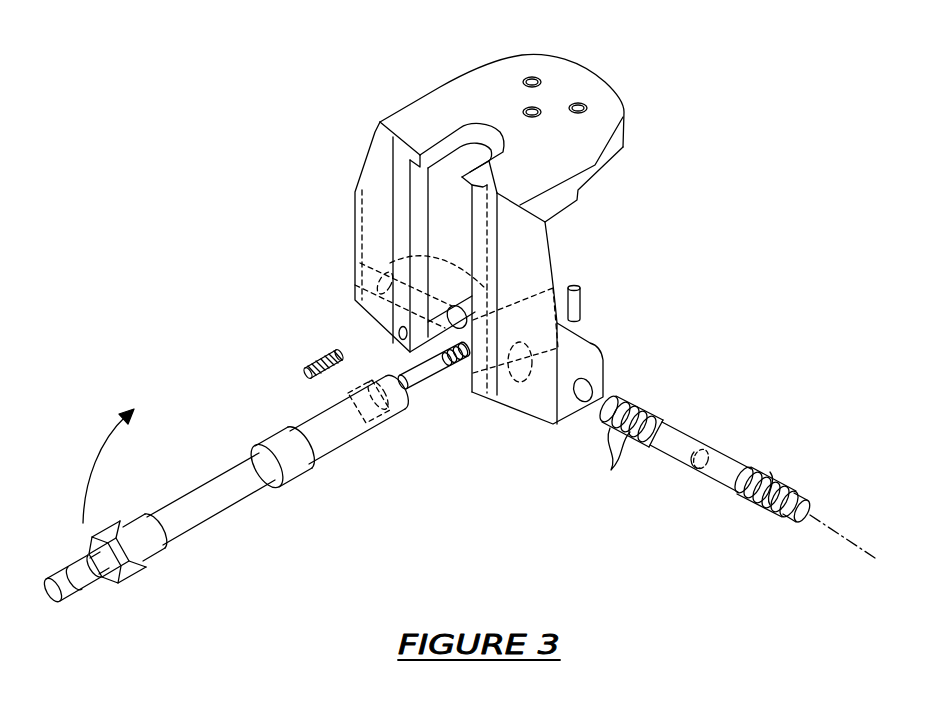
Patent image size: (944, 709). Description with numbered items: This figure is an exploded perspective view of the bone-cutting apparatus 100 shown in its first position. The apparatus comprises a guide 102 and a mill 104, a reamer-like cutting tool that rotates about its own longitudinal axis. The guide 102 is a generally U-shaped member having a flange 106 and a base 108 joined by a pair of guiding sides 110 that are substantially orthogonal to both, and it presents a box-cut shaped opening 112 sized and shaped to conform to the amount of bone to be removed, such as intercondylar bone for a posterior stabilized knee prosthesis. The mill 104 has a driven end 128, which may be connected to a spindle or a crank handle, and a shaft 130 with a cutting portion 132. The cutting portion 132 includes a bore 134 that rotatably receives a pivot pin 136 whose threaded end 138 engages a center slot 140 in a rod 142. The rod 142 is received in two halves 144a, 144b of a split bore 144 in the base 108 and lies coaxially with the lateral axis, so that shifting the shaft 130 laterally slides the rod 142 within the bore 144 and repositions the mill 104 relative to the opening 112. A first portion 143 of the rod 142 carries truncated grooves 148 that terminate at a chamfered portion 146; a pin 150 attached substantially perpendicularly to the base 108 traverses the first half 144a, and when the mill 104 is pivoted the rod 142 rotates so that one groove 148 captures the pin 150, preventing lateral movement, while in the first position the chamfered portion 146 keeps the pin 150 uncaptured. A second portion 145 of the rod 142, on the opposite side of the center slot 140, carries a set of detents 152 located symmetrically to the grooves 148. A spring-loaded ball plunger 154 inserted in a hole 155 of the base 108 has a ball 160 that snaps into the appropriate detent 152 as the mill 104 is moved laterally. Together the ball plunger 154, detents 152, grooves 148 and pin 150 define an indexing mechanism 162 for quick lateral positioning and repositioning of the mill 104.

The bone-cutting apparatus 100 is at (255, 190).
The guide 102 is at (406, 86).
The mill 104 is at (210, 548).
The flange 106 is at (550, 88).
The base 108 is at (562, 402).
The guiding sides 110 is at (373, 221).
The box-cut opening 112 is at (436, 187).
The driven end 128 is at (75, 603).
The shaft 130 is at (222, 482).
The cutting portion 132 is at (303, 450).
The bore 134 is at (385, 422).
The pivot pin 136 is at (420, 385).
The threaded end 138 is at (452, 372).
The center slot 140 is at (710, 445).
The rod 142 is at (660, 505).
The first portion 143 is at (752, 507).
The split bore 144 is at (452, 262).
The first half of the split bore 144a is at (525, 398).
The second half of the split bore 144b is at (368, 262).
The second portion 145 is at (643, 403).
The chamfered portion 146 is at (780, 523).
The grooves 148 is at (782, 490).
The pin 150 is at (582, 297).
The detents 152 is at (629, 466).
The spring-loaded ball plunger 154 is at (306, 375).
The hole 155 is at (402, 341).
The ball 160 is at (336, 350).
The indexing mechanism 162 is at (358, 336).